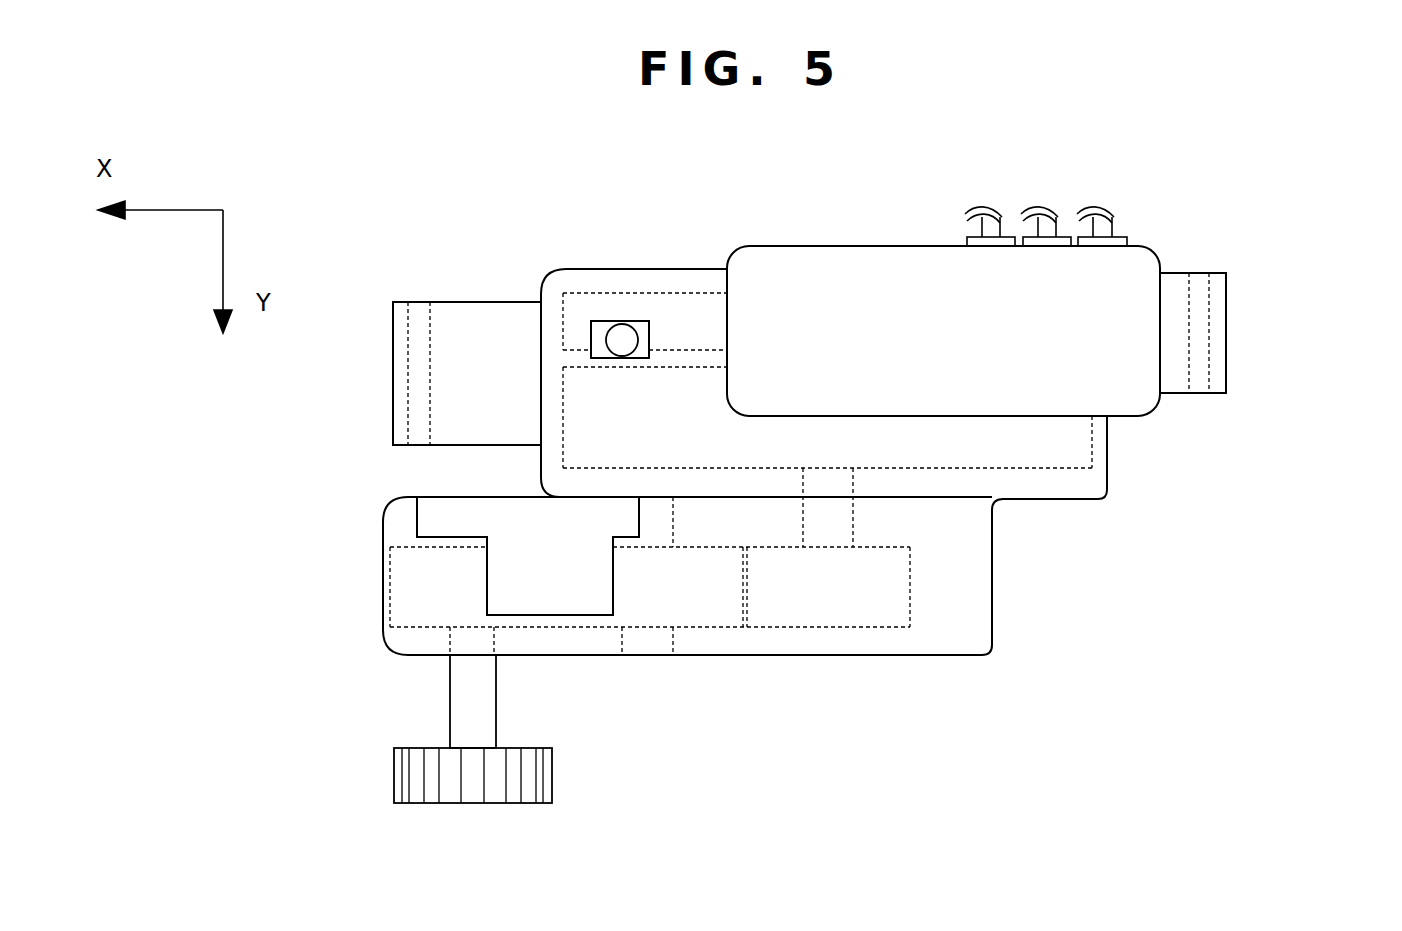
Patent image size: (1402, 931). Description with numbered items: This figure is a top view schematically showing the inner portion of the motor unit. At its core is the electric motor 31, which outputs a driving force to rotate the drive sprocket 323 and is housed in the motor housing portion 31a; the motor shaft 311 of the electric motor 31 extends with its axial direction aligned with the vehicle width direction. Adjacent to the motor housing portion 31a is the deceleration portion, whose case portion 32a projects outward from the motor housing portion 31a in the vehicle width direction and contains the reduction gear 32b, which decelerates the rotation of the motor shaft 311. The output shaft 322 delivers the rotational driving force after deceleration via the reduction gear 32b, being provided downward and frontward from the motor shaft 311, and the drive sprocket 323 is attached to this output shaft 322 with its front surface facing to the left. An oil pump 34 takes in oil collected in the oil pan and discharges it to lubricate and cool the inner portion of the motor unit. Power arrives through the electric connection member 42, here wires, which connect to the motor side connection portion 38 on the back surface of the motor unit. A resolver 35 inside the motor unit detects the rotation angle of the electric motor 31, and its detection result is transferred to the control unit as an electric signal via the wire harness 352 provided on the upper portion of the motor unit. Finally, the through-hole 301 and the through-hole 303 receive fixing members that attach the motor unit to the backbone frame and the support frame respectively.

The through-hole 301 is at (393, 380).
The through-hole 303 is at (1209, 358).
The resolver 35 is at (590, 293).
The wire harness 352 is at (622, 322).
The electric connection member 42 is at (1113, 220).
The motor side connection portion 38 is at (1098, 248).
The electric motor 31 is at (1092, 448).
The motor housing portion 31a is at (1107, 432).
The motor shaft 311 is at (853, 520).
The case portion 32a is at (992, 580).
The reduction gear 32b is at (712, 627).
The oil pump 34 is at (417, 521).
The output shaft 322 is at (496, 713).
The drive sprocket 323 is at (440, 803).